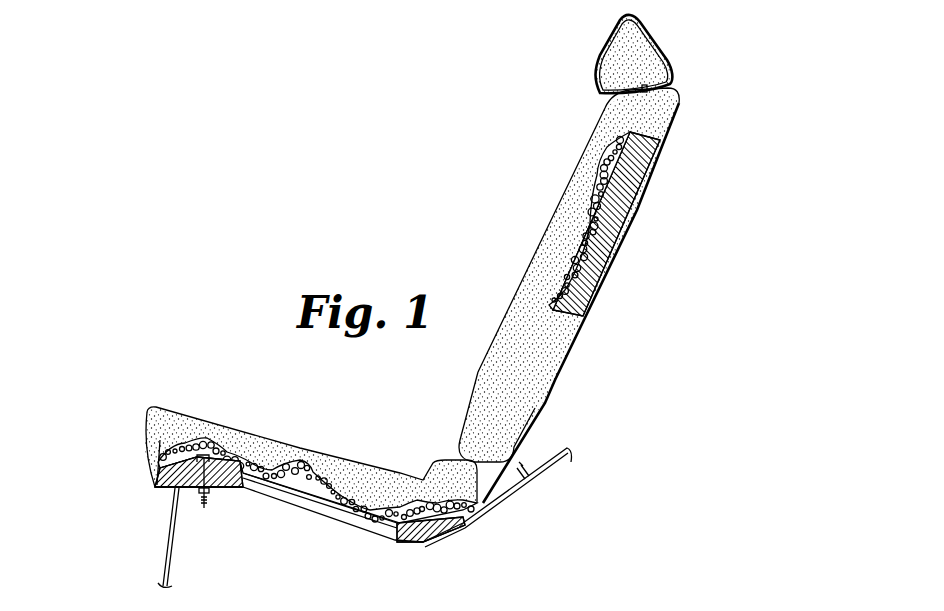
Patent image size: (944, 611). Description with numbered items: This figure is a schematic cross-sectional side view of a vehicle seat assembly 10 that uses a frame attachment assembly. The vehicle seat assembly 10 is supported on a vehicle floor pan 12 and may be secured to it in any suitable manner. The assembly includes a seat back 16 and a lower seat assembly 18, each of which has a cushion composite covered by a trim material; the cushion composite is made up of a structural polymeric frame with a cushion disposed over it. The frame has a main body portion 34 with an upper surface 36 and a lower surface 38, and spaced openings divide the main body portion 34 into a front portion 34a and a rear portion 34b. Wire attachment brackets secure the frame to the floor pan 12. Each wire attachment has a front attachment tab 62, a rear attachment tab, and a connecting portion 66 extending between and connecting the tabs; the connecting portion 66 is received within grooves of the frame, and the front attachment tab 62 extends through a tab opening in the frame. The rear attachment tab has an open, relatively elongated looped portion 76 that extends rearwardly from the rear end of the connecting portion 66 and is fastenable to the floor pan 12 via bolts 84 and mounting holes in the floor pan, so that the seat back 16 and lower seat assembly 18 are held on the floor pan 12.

The vehicle seat assembly 10 is at (120, 346).
The vehicle floor pan 12 is at (160, 550).
The seat back 16 is at (508, 129).
The lower seat assembly 18 is at (104, 415).
The main body portion 34 is at (245, 490).
The front portion 34a is at (172, 478).
The rear portion 34b is at (450, 525).
The upper surface 36 is at (223, 453).
The lower surface 38 is at (217, 490).
The front attachment tab 62 is at (200, 505).
The connecting portion 66 is at (308, 493).
The looped portion 76 is at (568, 450).
The bolt 84 is at (523, 468).